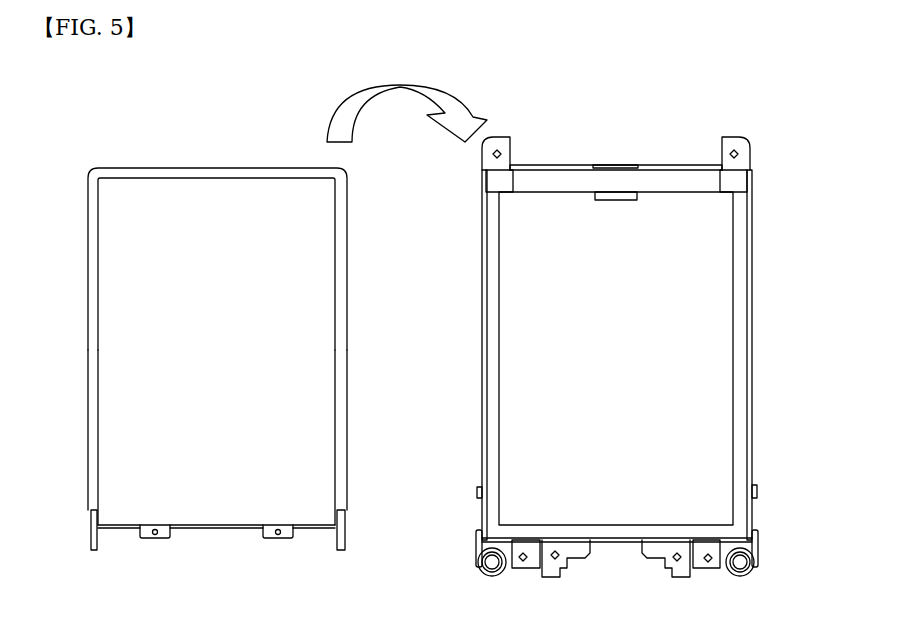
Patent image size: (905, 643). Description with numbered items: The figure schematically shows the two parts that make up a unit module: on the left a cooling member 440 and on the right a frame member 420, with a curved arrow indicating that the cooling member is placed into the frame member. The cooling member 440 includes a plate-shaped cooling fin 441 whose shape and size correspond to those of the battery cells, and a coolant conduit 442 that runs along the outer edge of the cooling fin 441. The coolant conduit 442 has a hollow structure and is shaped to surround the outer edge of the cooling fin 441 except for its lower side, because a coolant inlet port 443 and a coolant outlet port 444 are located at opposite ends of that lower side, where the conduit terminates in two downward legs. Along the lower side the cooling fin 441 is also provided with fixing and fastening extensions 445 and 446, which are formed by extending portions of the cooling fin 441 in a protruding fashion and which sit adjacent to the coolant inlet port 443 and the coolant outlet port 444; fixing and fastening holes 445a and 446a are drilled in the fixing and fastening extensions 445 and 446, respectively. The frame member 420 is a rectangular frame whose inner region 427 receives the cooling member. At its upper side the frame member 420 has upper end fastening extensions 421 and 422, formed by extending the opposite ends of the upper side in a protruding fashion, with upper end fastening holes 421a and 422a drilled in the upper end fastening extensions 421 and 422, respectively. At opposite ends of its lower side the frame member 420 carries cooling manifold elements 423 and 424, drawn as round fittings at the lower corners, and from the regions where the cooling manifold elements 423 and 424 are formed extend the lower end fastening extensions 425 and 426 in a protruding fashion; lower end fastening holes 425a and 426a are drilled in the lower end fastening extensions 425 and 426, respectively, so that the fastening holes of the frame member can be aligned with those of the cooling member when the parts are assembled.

The cooling member 440 is at (203, 148).
The cooling fin 441 is at (307, 273).
The coolant conduit 442 is at (347, 338).
The coolant inlet port 443 is at (345, 540).
The coolant outlet port 444 is at (89, 540).
The fixing and fastening extension 445 is at (328, 501).
The fixing and fastening extension 446 is at (108, 501).
The fixing and fastening hole 445a is at (278, 528).
The fixing and fastening hole 446a is at (155, 528).
The frame member 420 is at (655, 142).
The upper end fastening extension 421 is at (493, 154).
The upper end fastening extension 422 is at (747, 154).
The upper end fastening hole 421a is at (485, 152).
The upper end fastening hole 422a is at (750, 152).
The cooling manifold element 423 is at (750, 575).
The cooling manifold element 424 is at (478, 577).
The lower end fastening extension 425 is at (732, 531).
The lower end fastening extension 426 is at (501, 531).
The lower end fastening hole 425a is at (677, 553).
The lower end fastening hole 426a is at (555, 551).
The panel 427 is at (628, 368).